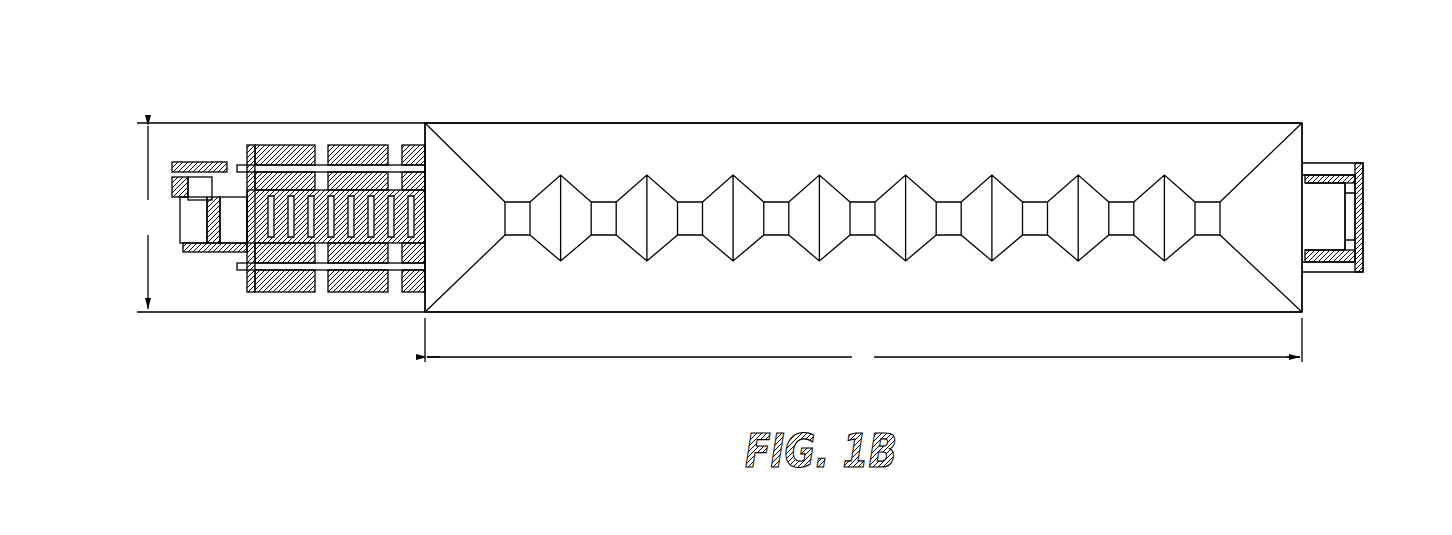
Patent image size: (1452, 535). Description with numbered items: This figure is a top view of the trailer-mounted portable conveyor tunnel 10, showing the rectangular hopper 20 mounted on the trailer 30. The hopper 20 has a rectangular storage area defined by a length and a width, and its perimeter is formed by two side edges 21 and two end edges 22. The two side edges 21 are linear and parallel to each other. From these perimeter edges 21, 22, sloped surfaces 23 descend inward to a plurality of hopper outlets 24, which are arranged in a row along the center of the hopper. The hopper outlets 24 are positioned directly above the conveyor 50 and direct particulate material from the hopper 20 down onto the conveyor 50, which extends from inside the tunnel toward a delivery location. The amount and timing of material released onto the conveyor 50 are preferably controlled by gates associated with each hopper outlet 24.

The trailer-mounted portable conveyor tunnel 10 is at (398, 72).
The hopper 20 is at (905, 123).
The side edges 21 is at (642, 123).
The end edges 22 is at (425, 142).
The sloped surfaces 23 is at (448, 226).
The hopper outlets 24 is at (1208, 202).
The trailer 30 is at (320, 272).
The conveyor 50 is at (233, 213).